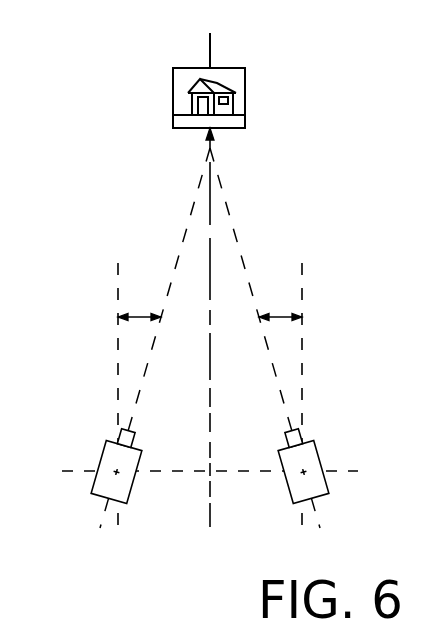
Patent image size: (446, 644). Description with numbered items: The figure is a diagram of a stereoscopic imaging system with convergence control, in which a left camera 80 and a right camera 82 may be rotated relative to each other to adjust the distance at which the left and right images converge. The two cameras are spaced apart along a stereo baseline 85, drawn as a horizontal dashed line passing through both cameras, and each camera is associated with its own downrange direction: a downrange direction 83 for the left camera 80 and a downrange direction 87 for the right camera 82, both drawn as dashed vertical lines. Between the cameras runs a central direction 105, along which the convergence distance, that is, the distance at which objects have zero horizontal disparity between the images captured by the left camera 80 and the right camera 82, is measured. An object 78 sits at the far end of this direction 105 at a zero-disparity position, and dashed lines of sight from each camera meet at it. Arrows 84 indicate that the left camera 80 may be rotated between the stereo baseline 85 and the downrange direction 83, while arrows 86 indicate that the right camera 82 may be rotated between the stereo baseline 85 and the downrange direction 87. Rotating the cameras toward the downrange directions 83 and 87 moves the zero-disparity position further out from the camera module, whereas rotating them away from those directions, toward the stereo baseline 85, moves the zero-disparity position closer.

The object 78 is at (227, 68).
The left camera 80 is at (112, 458).
The right camera 82 is at (308, 458).
The downrange direction 83 is at (118, 372).
The arrows 84 is at (140, 316).
The stereo baseline 85 is at (187, 472).
The arrows 86 is at (280, 316).
The downrange direction 87 is at (302, 372).
The direction 105 is at (212, 437).